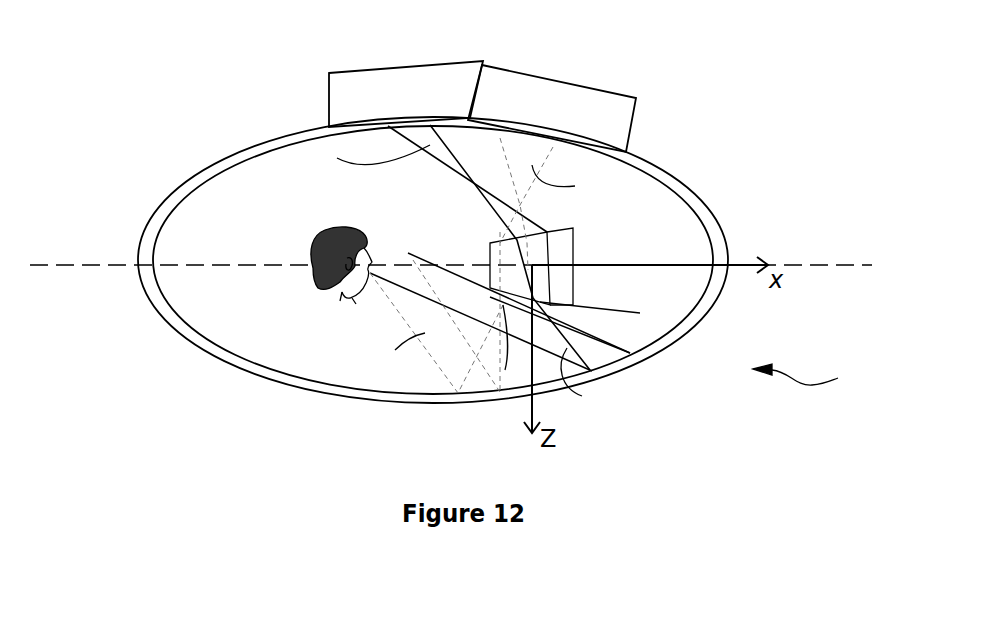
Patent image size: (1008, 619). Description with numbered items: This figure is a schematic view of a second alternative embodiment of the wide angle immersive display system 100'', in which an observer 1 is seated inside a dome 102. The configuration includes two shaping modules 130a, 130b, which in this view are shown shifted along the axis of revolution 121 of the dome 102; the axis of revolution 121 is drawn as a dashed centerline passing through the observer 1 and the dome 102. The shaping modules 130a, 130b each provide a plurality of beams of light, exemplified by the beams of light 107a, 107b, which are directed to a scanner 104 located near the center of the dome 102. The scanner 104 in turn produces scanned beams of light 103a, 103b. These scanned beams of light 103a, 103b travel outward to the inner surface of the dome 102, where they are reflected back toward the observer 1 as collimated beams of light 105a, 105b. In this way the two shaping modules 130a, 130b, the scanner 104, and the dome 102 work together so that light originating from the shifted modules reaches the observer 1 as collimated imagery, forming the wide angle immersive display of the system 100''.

The observer 1 is at (333, 293).
The dome 102 is at (725, 242).
The scanned beam of light 103a is at (640, 313).
The scanned beam of light 103b is at (505, 370).
The scanner 104 is at (562, 247).
The collimated beam of light 105a is at (582, 396).
The collimated beam of light 105b is at (395, 350).
The beam of light 107a is at (337, 158).
The beam of light 107b is at (575, 186).
The axis of revolution 121 is at (471, 265).
The shaping module 130a is at (413, 66).
The shaping module 130b is at (557, 82).
The system 100'' is at (804, 375).